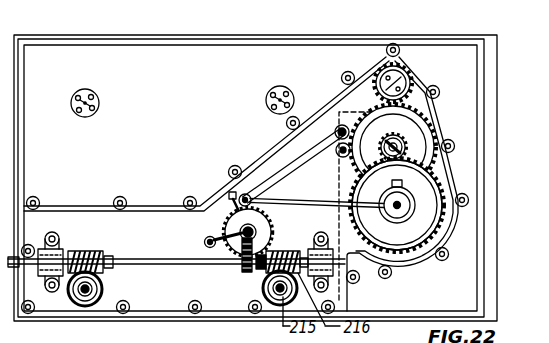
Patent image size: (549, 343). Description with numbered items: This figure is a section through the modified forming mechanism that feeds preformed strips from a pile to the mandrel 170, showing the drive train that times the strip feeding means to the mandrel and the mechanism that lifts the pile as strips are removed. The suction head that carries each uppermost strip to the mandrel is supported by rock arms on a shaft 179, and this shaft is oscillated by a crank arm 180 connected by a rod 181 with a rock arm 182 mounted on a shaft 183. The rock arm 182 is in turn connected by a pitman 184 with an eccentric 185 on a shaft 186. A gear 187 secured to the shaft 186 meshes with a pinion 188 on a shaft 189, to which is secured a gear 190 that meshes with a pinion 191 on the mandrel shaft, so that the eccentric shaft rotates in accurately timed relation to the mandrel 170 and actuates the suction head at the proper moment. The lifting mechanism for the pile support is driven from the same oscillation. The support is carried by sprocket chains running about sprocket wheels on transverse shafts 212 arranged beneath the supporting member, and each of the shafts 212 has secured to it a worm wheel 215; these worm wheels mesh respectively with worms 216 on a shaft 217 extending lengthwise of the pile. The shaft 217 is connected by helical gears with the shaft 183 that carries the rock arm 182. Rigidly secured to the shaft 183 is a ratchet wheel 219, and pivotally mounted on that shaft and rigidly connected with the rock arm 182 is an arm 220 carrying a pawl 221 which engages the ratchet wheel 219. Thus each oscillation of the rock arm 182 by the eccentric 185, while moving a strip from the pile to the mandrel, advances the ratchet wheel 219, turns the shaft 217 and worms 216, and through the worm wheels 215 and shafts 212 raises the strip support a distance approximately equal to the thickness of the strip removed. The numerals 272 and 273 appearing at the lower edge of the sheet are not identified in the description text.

The mandrel 170 is at (410, 70).
The shaft 179 is at (338, 155).
The crank arm 180 is at (334, 135).
The rod 181 is at (262, 170).
The rock arm 182 is at (228, 200).
The shaft 183 is at (267, 247).
The pitman 184 is at (280, 198).
The eccentric 185 is at (402, 215).
The shaft 186 is at (387, 214).
The gear 187 is at (422, 213).
The pinion 188 is at (410, 152).
The shaft 189 is at (410, 143).
The gear 190 is at (408, 127).
The pinion 191 is at (412, 83).
The transverse shafts 212 is at (101, 286).
The worm wheel 215 is at (101, 297).
The worms 216 is at (88, 251).
The shaft 217 is at (139, 260).
The ratchet wheel 219 is at (257, 221).
The arm 220 is at (222, 245).
The pawl 221 is at (222, 233).
The support 272 is at (62, 335).
The support 273 is at (13, 335).